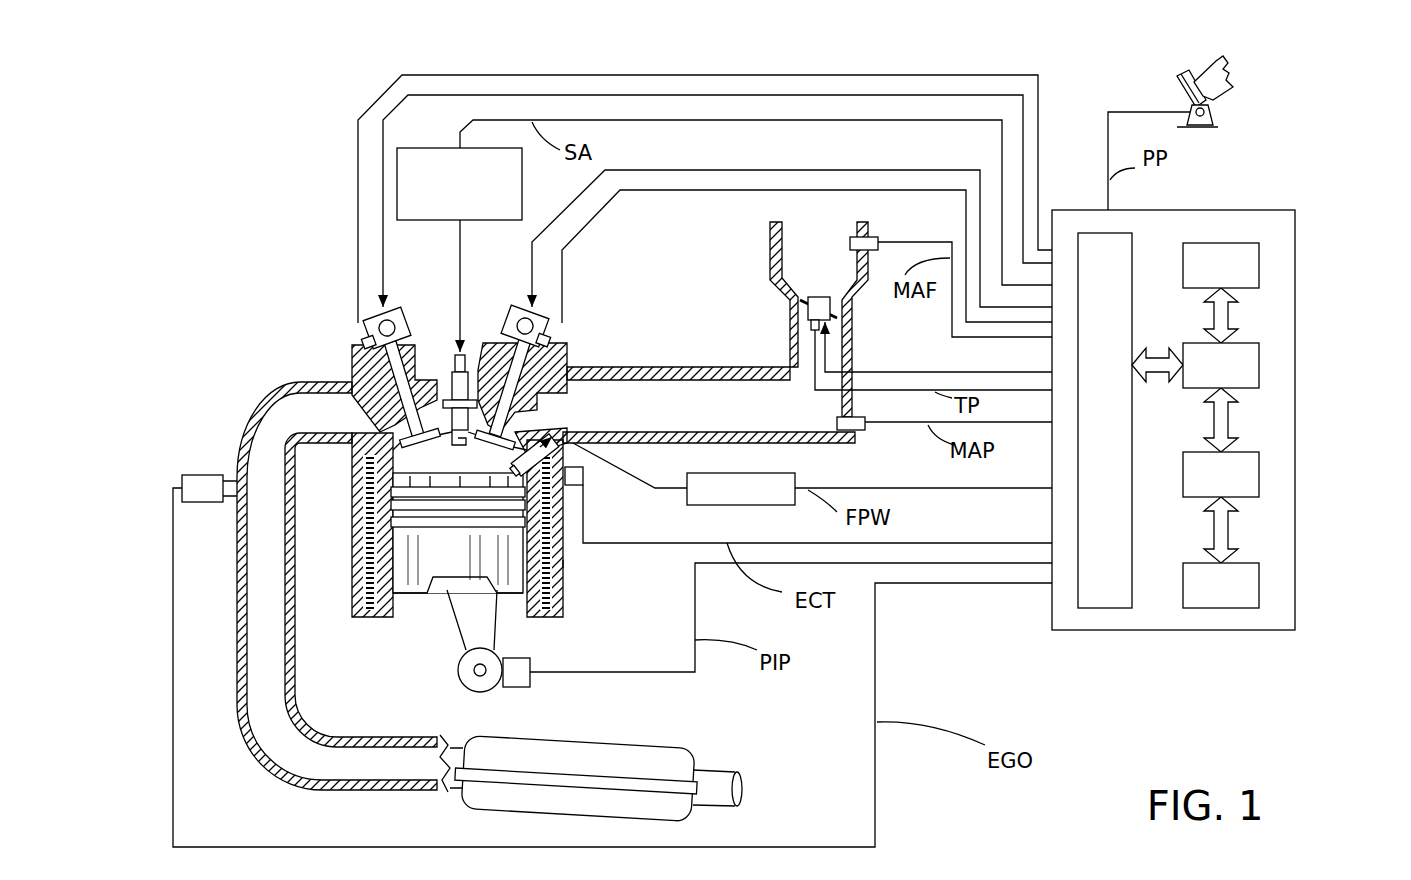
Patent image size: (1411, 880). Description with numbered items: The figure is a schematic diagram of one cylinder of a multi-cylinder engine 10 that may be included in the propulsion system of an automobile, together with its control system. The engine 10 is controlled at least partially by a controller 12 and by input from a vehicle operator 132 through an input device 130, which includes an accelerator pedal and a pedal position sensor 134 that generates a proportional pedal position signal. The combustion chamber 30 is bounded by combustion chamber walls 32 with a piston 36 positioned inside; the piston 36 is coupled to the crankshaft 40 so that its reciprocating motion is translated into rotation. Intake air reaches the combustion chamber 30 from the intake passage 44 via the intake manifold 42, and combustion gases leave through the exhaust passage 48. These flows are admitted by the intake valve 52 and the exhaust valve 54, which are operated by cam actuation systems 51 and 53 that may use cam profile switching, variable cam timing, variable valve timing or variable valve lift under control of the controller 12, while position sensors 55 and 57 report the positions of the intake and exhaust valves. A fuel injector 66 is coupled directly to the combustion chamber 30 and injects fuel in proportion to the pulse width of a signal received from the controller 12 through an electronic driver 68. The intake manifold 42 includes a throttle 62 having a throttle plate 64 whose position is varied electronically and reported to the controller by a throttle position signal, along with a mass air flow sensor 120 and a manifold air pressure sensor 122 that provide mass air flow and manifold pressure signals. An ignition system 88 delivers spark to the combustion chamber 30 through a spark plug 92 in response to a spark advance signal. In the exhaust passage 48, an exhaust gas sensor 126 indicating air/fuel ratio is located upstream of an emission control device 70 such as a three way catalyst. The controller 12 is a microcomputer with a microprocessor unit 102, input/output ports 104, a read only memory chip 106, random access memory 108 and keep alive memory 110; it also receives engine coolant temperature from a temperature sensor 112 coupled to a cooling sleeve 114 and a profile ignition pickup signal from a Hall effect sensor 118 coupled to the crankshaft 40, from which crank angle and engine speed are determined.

The engine 10 is at (272, 291).
The controller 12 is at (1283, 210).
The combustion chamber 30 is at (457, 453).
The combustion chamber walls 32 is at (398, 600).
The piston 36 is at (440, 582).
The crankshaft 40 is at (468, 688).
The intake manifold 42 is at (803, 269).
The intake passage 44 is at (735, 418).
The exhaust passage 48 is at (303, 424).
The cam actuation system 51 is at (518, 312).
The intake valve 52 is at (502, 415).
The cam actuation system 53 is at (392, 312).
The exhaust valve 54 is at (352, 386).
The position sensor 55 is at (545, 334).
The position sensor 57 is at (368, 328).
The throttle 62 is at (843, 310).
The throttle plate 64 is at (800, 305).
The fuel injector 66 is at (565, 460).
The electronic driver 68 is at (717, 505).
The emission control device 70 is at (665, 745).
The ignition system 88 is at (413, 148).
The spark plug 92 is at (462, 355).
The microprocessor unit 102 is at (1262, 358).
The input/output ports 104 is at (1135, 242).
The read only memory chip 106 is at (1262, 260).
The random access memory 108 is at (1262, 472).
The keep alive memory 110 is at (1262, 583).
The temperature sensor 112 is at (577, 486).
The cooling sleeve 114 is at (567, 563).
The Hall effect sensor 118 is at (522, 692).
The mass air flow sensor 120 is at (870, 237).
The manifold air pressure sensor 122 is at (862, 432).
The exhaust gas sensor 126 is at (182, 478).
The input device 130 is at (1178, 88).
The vehicle operator 132 is at (1232, 73).
The pedal position sensor 134 is at (1217, 113).